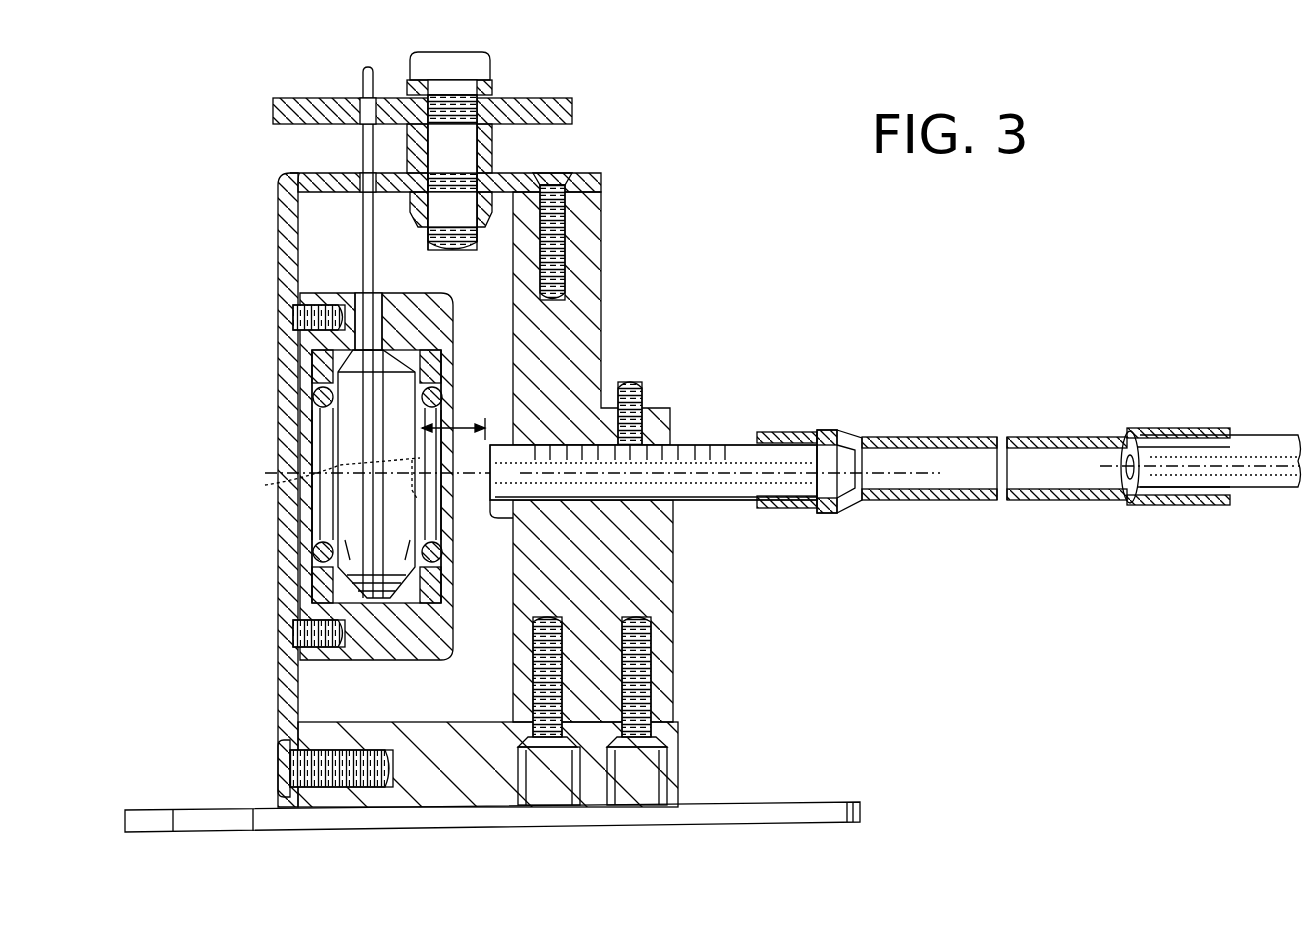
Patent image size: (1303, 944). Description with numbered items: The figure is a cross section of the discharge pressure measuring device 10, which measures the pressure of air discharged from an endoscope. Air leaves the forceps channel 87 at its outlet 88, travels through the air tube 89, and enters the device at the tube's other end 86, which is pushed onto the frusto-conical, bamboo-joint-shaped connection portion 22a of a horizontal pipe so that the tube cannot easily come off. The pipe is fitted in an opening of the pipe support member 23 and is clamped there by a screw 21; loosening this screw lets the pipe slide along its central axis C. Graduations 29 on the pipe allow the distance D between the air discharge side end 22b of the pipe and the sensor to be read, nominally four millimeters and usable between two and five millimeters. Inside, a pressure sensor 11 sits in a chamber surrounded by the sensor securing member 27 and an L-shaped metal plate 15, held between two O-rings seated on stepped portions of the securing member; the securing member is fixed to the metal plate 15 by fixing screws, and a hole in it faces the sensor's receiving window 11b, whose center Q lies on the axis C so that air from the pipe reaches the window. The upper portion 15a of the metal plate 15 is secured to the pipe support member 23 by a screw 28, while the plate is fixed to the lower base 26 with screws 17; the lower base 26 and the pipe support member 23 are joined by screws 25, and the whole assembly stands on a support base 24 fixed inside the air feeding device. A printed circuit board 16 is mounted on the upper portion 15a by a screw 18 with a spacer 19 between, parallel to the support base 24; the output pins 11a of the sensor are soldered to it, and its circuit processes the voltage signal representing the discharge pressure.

The discharge pressure measuring device 10 is at (265, 182).
The pressure sensor 11 is at (357, 507).
The output pins 11a is at (367, 66).
The receiving window 11b is at (372, 461).
The metal plate 15 is at (278, 255).
The upper portion 15a is at (345, 178).
The printed circuit board 16 is at (292, 100).
The screws 17 is at (280, 778).
The screw 18 is at (445, 60).
The spacer 19 is at (492, 160).
The screw 21 is at (630, 380).
The connection portion 22a is at (828, 515).
The air discharge side end 22b is at (523, 520).
The pipe support member 23 is at (675, 690).
The support base 24 is at (730, 815).
The screws 25 is at (622, 748).
The lower base 26 is at (435, 795).
The sensor securing member 27 is at (395, 650).
The screw 28 is at (556, 178).
The graduations 29 is at (722, 440).
The end of the air tube 86 is at (825, 430).
The forceps channel 87 is at (1262, 460).
The outlet 88 is at (1115, 502).
The air tube 89 is at (930, 438).
The central axis C is at (930, 475).
The distance D is at (453, 439).
The center Q is at (416, 498).